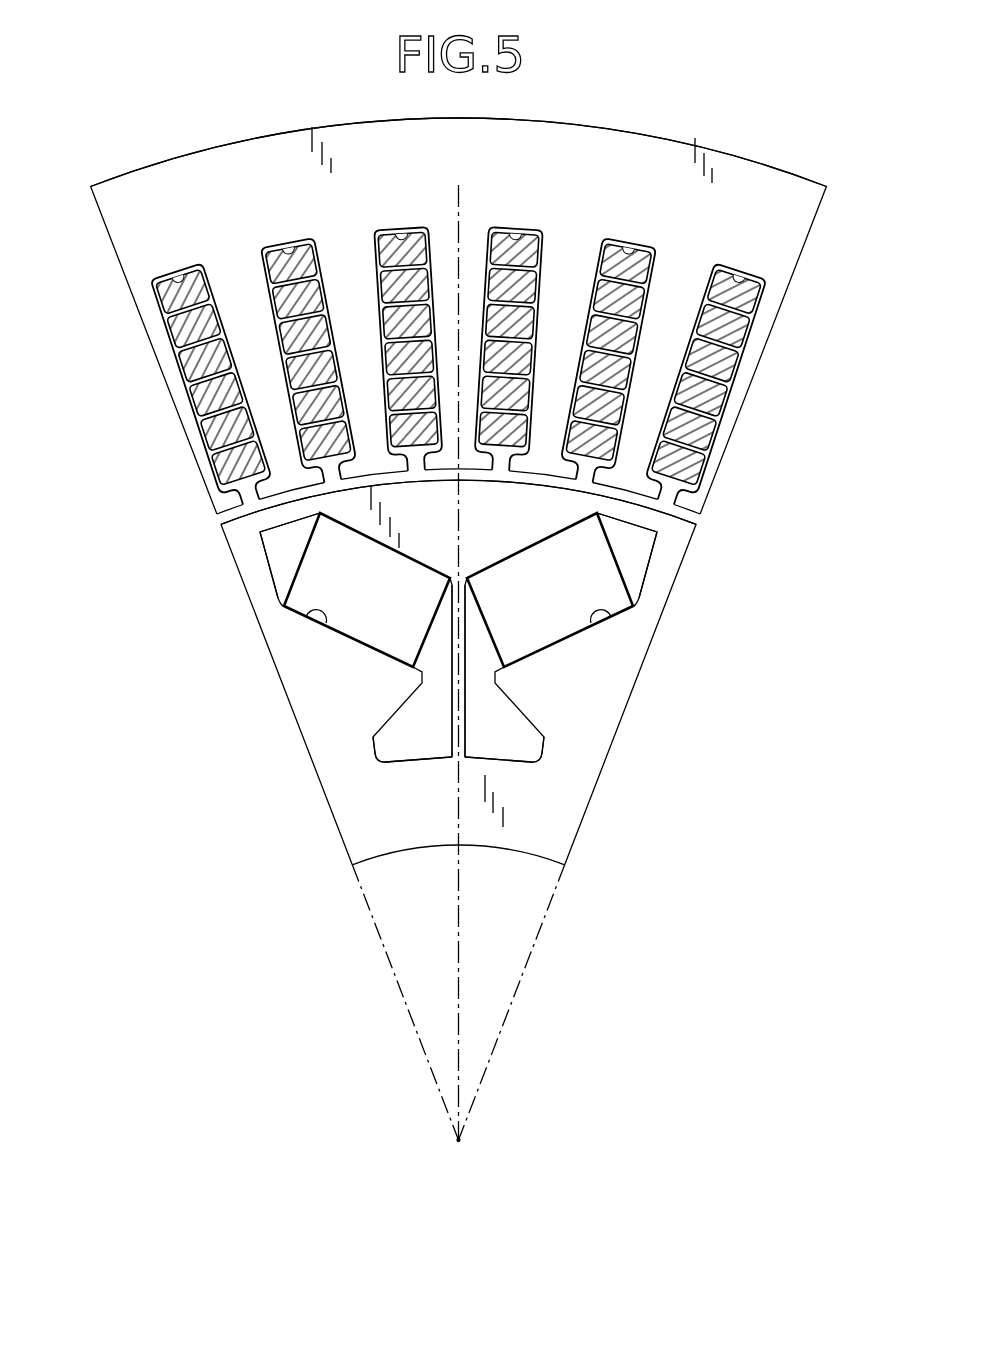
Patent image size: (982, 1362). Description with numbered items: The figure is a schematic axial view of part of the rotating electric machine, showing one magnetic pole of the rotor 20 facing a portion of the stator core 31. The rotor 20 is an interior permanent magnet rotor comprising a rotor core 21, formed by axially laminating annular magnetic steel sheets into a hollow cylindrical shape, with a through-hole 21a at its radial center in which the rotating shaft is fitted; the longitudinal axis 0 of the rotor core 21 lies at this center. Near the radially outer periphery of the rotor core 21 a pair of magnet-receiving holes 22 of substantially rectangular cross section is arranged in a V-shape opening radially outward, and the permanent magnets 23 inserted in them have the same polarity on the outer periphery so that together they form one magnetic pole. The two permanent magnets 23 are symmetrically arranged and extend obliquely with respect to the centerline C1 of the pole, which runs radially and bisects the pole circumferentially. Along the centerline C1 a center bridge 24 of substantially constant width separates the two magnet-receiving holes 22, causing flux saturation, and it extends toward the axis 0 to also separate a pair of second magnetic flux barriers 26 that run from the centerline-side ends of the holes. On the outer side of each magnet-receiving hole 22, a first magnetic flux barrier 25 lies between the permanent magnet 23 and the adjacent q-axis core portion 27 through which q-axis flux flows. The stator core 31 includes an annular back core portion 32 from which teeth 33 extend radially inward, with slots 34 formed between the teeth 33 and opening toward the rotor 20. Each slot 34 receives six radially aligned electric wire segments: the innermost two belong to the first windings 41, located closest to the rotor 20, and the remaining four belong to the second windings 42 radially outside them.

The center axis of rotor 0 is at (458, 1162).
The centerline of the magnetic pole C1 is at (461, 648).
The rotor 20 is at (344, 841).
The rotor core 21 is at (563, 812).
The through-hole 21a is at (410, 850).
The magnet-receiving hole 22 is at (310, 618).
The permanent magnet 23 is at (367, 625).
The center bridge 24 is at (467, 702).
The first magnetic flux barrier 25 is at (270, 542).
The second magnetic flux barrier 26 is at (403, 745).
The q-axis core portion 27 is at (255, 587).
The stator core 31 is at (118, 257).
The back core portion 32 is at (790, 240).
The tooth 33 is at (252, 334).
The slot 34 is at (177, 275).
The first windings 41 is at (217, 490).
The second windings 42 is at (213, 415).